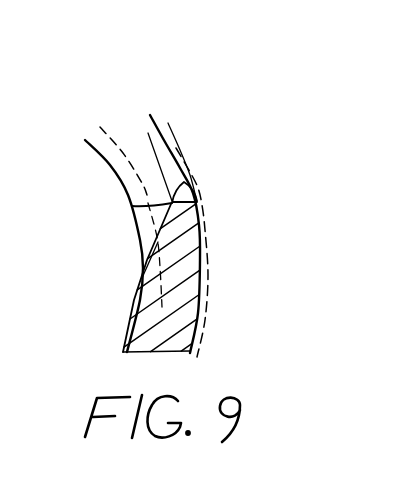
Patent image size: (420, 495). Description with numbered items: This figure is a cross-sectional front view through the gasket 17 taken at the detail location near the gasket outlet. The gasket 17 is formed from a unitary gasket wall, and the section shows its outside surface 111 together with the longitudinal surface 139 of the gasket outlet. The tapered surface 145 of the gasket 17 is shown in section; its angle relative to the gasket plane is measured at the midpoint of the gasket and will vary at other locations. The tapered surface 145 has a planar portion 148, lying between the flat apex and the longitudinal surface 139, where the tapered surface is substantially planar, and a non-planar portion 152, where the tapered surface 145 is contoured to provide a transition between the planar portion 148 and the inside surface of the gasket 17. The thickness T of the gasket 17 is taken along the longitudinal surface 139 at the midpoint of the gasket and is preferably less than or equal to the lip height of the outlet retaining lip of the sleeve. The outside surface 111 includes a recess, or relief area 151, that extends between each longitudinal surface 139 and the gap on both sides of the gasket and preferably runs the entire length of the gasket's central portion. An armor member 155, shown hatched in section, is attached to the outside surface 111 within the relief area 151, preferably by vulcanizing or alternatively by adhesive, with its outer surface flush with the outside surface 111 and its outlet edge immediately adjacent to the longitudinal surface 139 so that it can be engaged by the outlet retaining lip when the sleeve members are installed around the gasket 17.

The gasket 17 is at (179, 66).
The thickness of the gasket T is at (128, 143).
The outside surface 111 is at (200, 333).
The longitudinal surface 139 is at (200, 178).
The tapered surface 145 is at (147, 252).
The planar portion 148 is at (147, 270).
The relief area 151 is at (200, 258).
The non-planar portion 152 is at (135, 222).
The armor member 155 is at (203, 215).